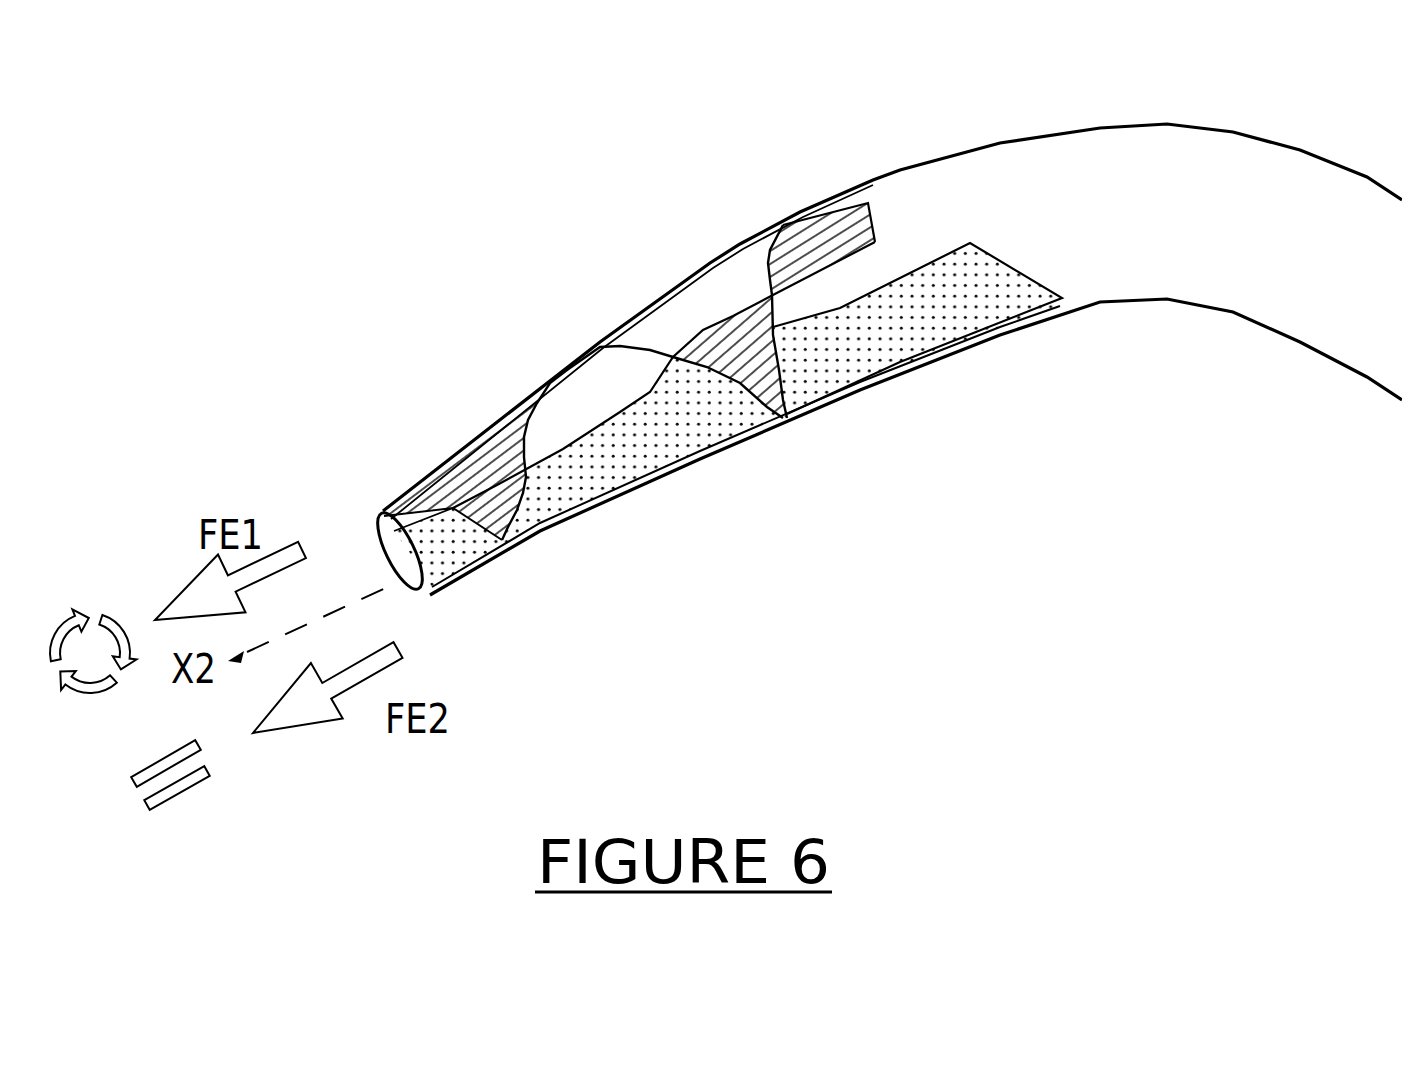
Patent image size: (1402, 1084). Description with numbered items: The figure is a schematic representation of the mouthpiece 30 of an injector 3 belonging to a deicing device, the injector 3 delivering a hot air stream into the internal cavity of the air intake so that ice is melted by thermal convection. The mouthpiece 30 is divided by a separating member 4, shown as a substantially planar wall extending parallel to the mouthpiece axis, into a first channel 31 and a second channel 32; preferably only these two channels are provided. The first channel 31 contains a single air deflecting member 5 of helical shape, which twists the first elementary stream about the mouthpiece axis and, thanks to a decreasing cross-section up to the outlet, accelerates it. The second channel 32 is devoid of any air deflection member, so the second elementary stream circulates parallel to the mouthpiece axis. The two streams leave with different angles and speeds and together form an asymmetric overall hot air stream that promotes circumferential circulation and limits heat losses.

The injector 3 is at (885, 311).
The separating member 4 is at (728, 437).
The air deflecting member 5 is at (664, 300).
The mouthpiece 30 is at (583, 368).
The first channel 31 is at (382, 464).
The second channel 32 is at (746, 517).